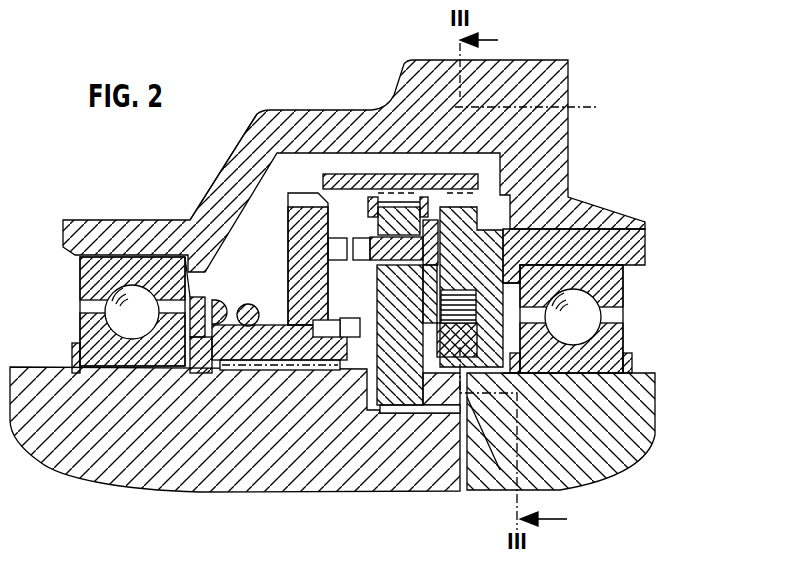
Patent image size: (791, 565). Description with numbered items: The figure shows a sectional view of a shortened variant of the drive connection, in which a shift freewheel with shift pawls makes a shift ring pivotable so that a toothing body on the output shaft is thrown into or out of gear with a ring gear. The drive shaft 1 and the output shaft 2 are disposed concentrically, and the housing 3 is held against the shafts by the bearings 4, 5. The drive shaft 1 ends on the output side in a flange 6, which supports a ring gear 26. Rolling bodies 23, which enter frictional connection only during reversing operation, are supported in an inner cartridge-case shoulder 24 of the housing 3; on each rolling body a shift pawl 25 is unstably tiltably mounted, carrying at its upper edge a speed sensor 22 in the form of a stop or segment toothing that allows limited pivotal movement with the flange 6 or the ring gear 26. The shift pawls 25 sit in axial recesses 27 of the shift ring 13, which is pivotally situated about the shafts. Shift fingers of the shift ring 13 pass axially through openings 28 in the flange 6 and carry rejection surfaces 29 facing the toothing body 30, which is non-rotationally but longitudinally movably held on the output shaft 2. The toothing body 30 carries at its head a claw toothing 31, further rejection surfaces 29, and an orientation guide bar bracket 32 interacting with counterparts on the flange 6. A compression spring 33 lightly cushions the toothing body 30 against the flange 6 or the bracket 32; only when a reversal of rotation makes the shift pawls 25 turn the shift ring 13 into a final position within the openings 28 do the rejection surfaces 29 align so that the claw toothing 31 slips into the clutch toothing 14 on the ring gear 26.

The drive shaft 1 is at (620, 405).
The output shaft 2 is at (58, 400).
The housing 3 is at (483, 88).
The bearing 4 is at (603, 287).
The bearing 5 is at (113, 268).
The flange 6 is at (401, 218).
The shift ring 13 is at (425, 312).
The clutch toothing 14 is at (393, 260).
The speed sensor 22 is at (525, 182).
The rolling bodies 23 is at (460, 313).
The inner cartridge-case shoulder 24 is at (467, 400).
The shift pawl 25 is at (640, 223).
The ring gear 26 is at (365, 186).
The axial recesses 27 is at (424, 200).
The openings 28 is at (372, 205).
The rejection surfaces 29 is at (352, 250).
The toothing body 30 is at (230, 158).
The claw toothing 31 is at (300, 197).
The orientation guide bar bracket 32 is at (352, 322).
The compression spring 33 is at (246, 304).